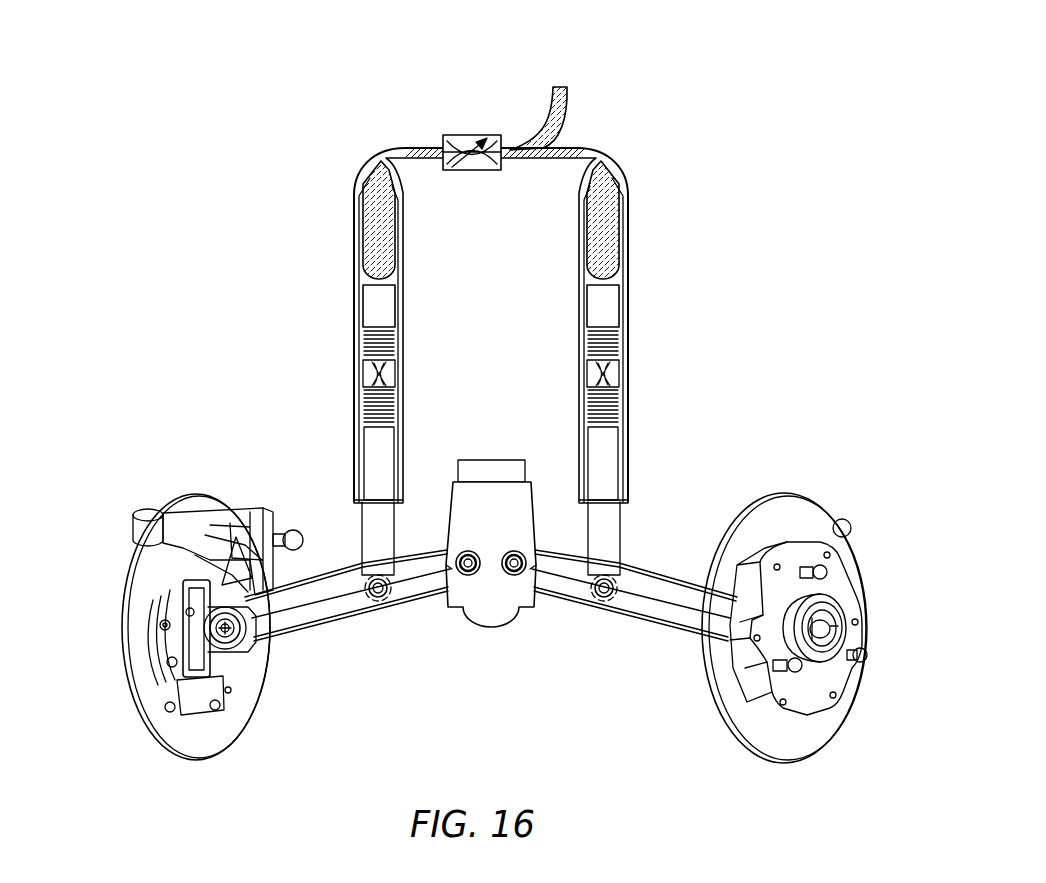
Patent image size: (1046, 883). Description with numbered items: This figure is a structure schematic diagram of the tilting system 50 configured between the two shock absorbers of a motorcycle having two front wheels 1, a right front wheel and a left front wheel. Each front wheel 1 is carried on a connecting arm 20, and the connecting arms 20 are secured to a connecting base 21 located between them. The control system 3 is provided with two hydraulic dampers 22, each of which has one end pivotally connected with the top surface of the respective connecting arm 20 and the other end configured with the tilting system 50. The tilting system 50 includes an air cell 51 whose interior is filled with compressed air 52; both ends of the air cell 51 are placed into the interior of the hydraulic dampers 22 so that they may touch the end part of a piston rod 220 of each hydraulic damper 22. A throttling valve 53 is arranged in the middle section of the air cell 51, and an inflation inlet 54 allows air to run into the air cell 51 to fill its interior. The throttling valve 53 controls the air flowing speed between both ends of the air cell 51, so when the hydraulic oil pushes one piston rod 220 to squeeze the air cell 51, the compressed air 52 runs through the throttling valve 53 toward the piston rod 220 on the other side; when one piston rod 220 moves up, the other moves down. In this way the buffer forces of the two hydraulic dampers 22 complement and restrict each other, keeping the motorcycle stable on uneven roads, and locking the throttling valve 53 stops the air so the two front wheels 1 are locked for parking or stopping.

The front wheel 1 is at (130, 582).
The control system 3 is at (392, 712).
The connecting arm 20 is at (330, 613).
The connecting base 21 is at (495, 577).
The hydraulic damper 22 is at (372, 532).
The piston rod 220 is at (373, 306).
The tilting system 50 is at (710, 128).
The air cell 51 is at (606, 155).
The compressed air 52 is at (368, 227).
The throttling valve 53 is at (465, 140).
The inflation inlet 54 is at (559, 92).